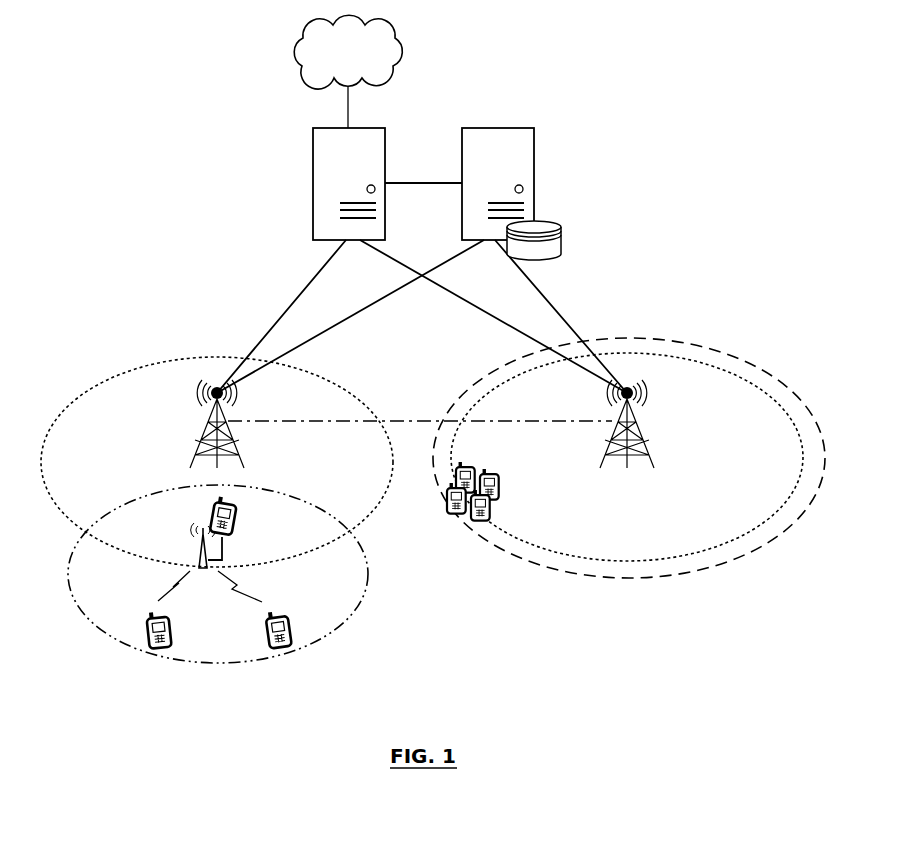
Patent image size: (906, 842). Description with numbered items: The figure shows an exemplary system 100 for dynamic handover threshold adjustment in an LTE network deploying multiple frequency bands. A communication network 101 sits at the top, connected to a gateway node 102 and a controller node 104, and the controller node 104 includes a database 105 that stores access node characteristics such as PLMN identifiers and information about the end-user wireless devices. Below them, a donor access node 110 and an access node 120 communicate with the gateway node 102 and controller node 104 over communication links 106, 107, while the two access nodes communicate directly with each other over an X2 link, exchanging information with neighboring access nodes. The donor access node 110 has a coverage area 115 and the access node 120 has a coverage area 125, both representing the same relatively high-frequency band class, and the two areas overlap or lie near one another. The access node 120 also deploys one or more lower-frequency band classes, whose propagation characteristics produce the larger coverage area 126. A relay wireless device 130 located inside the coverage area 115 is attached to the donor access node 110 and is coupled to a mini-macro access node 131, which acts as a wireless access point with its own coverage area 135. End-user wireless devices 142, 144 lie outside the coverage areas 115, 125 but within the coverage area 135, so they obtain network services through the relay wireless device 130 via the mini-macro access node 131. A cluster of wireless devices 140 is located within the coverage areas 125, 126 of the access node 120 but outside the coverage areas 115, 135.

The system 100 is at (503, 64).
The communication network 101 is at (367, 60).
The gateway node 102 is at (313, 152).
The controller node 104 is at (534, 172).
The database 105 is at (566, 247).
The communication link 106 is at (405, 267).
The communication link 107 is at (376, 304).
The X2 link X2 is at (401, 413).
The donor access node 110 is at (198, 457).
The coverage area 115 is at (132, 372).
The access node 120 is at (644, 448).
The coverage area 125 is at (637, 352).
The coverage area 126 is at (722, 352).
The relay wireless device 130 is at (240, 525).
The mini-macro access node 131 is at (197, 551).
The coverage area 135 is at (70, 587).
The cluster of wireless devices 140 is at (462, 505).
The end-user wireless device 142 is at (143, 628).
The end-user wireless device 144 is at (287, 625).